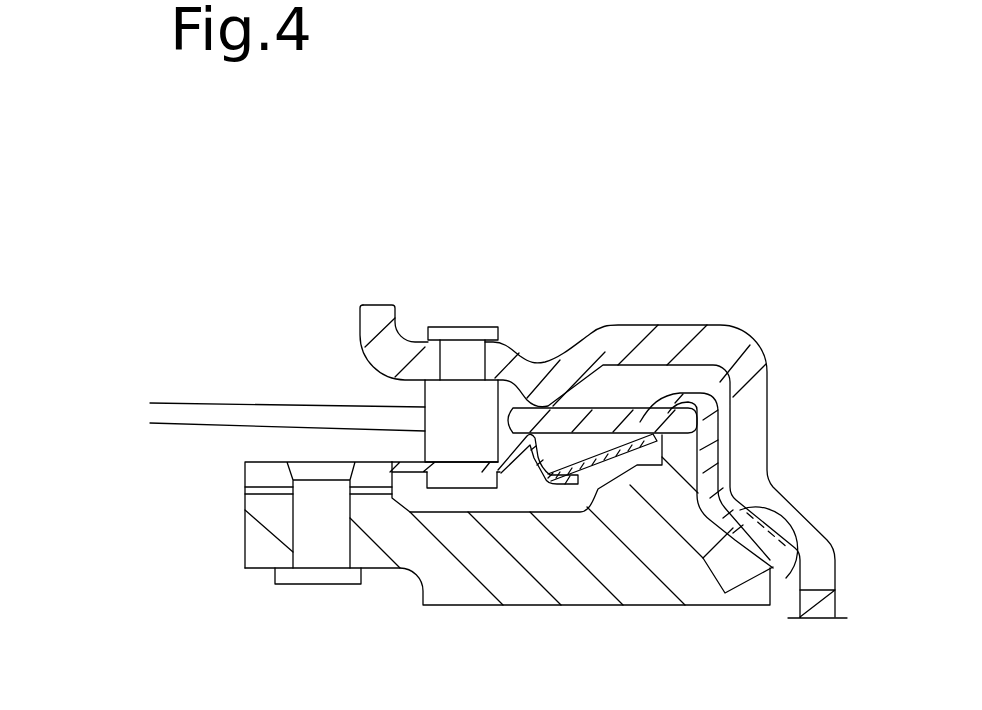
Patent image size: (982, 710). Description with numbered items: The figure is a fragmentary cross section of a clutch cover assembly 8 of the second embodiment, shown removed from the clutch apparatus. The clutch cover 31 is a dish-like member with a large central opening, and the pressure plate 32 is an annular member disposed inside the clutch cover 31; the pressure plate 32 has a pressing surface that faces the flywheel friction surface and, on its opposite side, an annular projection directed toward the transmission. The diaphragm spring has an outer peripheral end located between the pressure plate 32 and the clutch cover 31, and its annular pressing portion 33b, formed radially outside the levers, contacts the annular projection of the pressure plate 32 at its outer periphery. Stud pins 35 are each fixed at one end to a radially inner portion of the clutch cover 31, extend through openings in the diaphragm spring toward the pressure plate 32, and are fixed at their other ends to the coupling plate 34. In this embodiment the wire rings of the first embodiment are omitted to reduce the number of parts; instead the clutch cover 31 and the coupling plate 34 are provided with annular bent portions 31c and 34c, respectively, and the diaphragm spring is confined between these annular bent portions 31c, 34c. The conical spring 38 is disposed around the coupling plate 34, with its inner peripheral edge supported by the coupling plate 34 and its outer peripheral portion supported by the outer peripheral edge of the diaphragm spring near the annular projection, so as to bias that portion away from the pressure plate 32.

The clutch cover assembly 8 is at (706, 268).
The clutch cover 31 is at (630, 342).
The annular bent portion 31c is at (555, 380).
The pressure plate 32 is at (548, 558).
The annular pressing portion 33b is at (724, 345).
The coupling plate 34 is at (264, 460).
The annular bent portion 34c is at (525, 445).
The stud pin 35 is at (458, 400).
The conical spring 38 is at (615, 457).